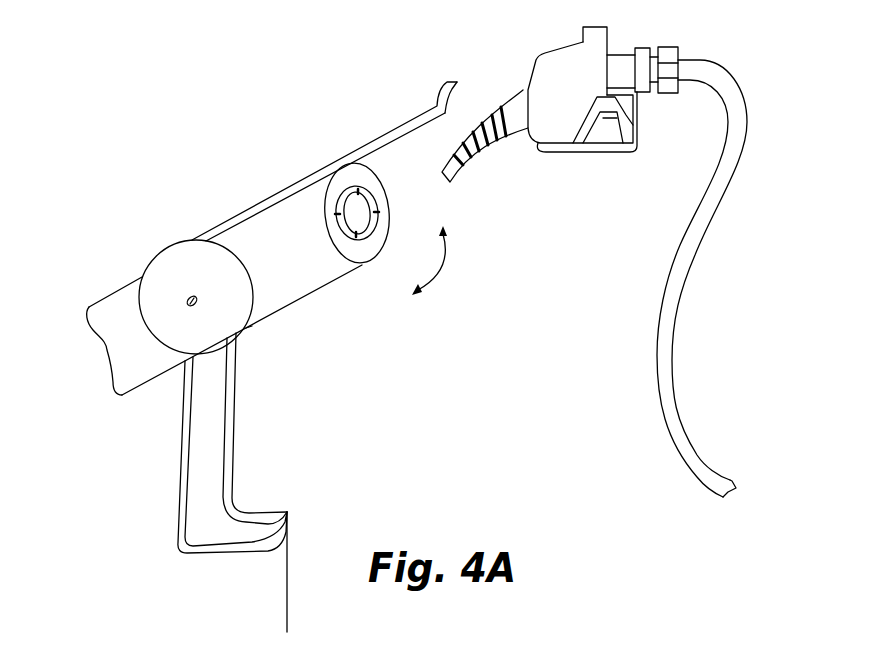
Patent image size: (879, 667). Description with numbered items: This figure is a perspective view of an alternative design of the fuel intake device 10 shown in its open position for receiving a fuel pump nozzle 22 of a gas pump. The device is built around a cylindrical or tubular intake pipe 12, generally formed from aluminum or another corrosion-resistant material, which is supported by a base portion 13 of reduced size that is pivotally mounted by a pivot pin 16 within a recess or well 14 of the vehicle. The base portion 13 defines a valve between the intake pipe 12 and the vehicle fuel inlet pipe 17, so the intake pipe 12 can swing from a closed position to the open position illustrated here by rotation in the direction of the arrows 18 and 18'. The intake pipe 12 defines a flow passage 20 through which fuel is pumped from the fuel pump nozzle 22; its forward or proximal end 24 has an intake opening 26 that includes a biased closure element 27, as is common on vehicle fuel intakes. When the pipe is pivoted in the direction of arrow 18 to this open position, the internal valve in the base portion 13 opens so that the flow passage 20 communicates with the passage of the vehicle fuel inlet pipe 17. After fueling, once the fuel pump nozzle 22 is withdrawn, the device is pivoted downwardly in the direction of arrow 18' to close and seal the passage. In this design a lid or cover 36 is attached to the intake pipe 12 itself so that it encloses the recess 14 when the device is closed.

The fuel intake device 10 is at (259, 137).
The intake pipe 12 is at (290, 305).
The base portion 13 is at (253, 327).
The recess or well 14 is at (217, 402).
The pivot pin 16 is at (190, 295).
The vehicle fuel inlet pipe 17 is at (127, 383).
The arrow 18 is at (457, 256).
The arrow 18' is at (436, 311).
The flow passage 20 is at (362, 203).
The fuel pump nozzle 22 is at (610, 32).
The proximal end 24 is at (337, 262).
The intake opening 26 is at (355, 243).
The biased closure element 27 is at (326, 204).
The cover 36 is at (398, 125).